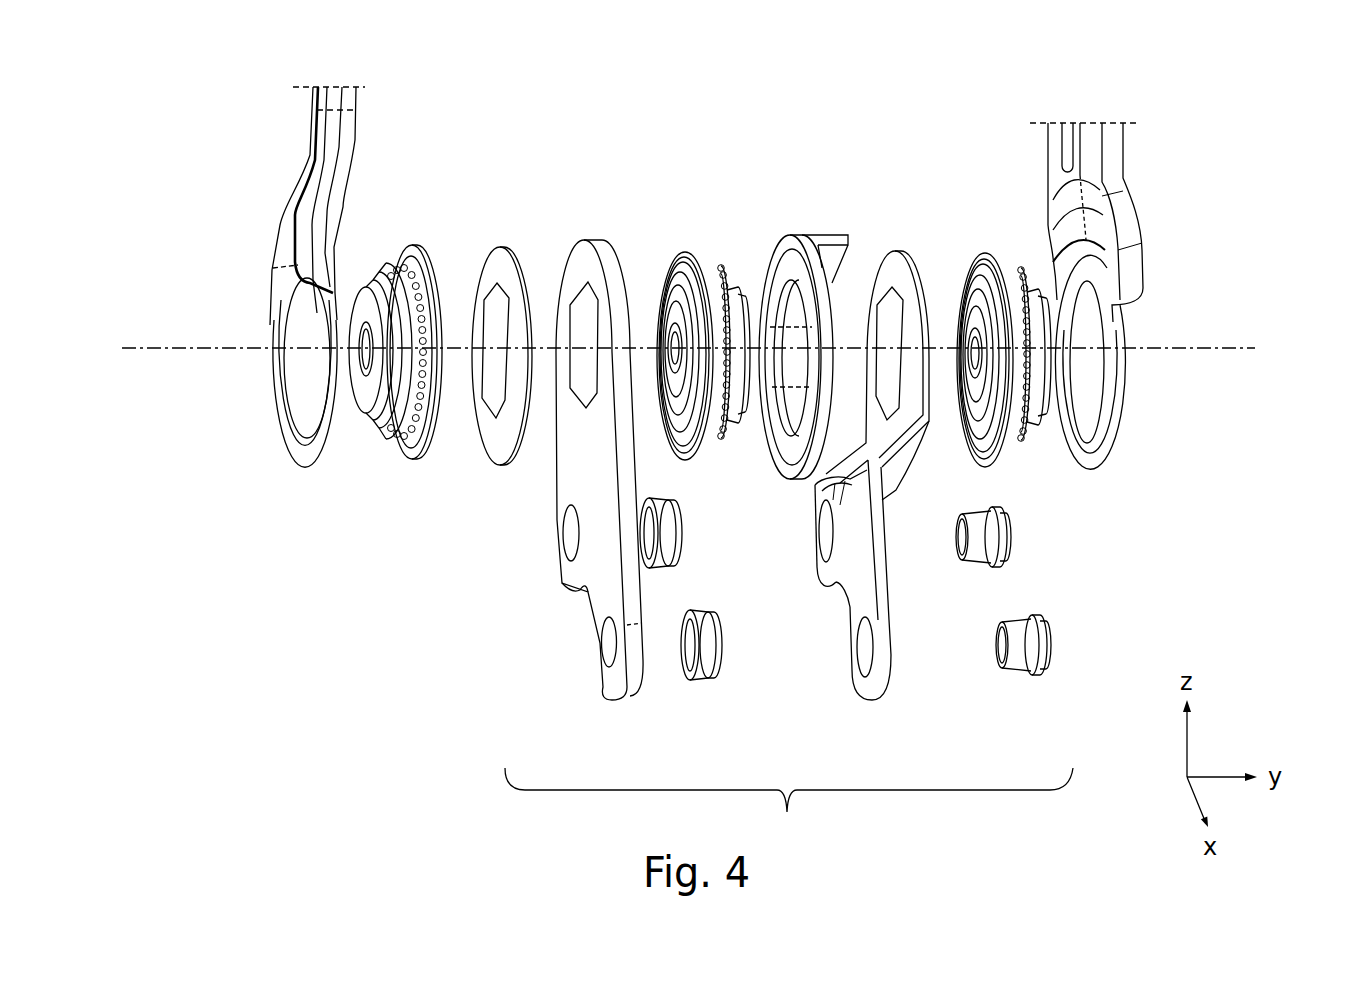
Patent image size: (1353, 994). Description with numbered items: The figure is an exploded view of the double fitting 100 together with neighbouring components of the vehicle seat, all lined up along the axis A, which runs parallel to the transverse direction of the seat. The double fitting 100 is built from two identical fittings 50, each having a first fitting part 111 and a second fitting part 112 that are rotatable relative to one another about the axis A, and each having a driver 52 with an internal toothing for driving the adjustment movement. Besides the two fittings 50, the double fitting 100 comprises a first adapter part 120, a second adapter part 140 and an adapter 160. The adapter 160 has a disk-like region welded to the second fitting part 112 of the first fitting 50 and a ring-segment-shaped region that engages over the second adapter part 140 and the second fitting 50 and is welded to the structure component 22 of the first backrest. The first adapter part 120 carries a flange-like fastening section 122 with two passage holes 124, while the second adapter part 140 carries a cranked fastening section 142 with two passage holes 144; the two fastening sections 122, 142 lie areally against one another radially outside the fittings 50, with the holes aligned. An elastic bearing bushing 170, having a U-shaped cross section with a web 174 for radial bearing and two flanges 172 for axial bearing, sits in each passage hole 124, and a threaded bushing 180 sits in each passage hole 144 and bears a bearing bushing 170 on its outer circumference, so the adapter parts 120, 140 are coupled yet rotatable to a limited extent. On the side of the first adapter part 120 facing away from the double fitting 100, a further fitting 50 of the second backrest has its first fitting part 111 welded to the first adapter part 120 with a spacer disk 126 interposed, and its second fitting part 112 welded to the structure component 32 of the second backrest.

The structure component 32 is at (312, 90).
The structure component 22 is at (1122, 183).
The axis A is at (150, 360).
The double fitting 100 is at (752, 499).
The fitting 50 is at (408, 232).
The first fitting part 111 is at (423, 270).
The second fitting part 112 is at (698, 360).
The driver 52 is at (355, 412).
The spacer disk 126 is at (501, 455).
The first adapter part 120 is at (554, 490).
The fastening section 122 is at (580, 590).
The passage hole 124 is at (563, 540).
The bearing bushing 170 is at (728, 628).
The flange 172 is at (685, 682).
The web 174 is at (707, 615).
The adapter 160 is at (803, 250).
The second adapter part 140 is at (874, 506).
The fastening section 142 is at (858, 612).
The passage hole 144 is at (822, 560).
The threaded bushing 180 is at (1010, 530).